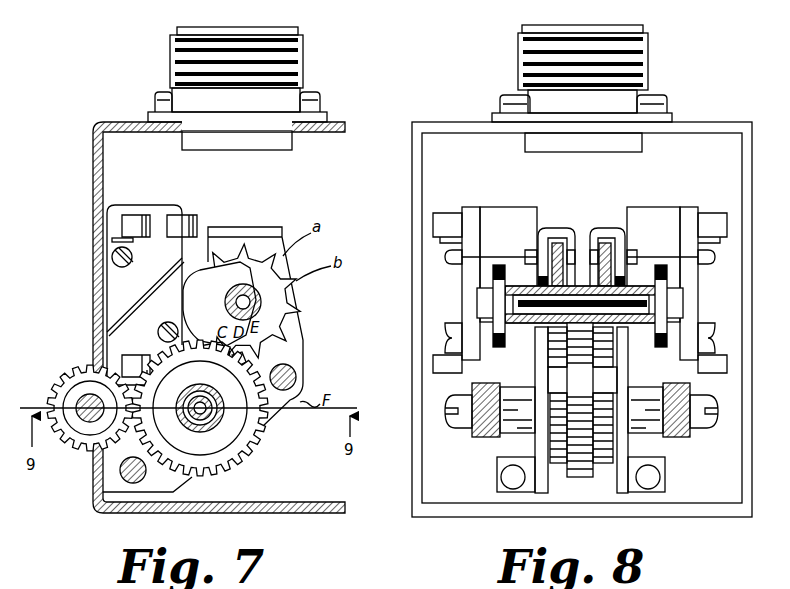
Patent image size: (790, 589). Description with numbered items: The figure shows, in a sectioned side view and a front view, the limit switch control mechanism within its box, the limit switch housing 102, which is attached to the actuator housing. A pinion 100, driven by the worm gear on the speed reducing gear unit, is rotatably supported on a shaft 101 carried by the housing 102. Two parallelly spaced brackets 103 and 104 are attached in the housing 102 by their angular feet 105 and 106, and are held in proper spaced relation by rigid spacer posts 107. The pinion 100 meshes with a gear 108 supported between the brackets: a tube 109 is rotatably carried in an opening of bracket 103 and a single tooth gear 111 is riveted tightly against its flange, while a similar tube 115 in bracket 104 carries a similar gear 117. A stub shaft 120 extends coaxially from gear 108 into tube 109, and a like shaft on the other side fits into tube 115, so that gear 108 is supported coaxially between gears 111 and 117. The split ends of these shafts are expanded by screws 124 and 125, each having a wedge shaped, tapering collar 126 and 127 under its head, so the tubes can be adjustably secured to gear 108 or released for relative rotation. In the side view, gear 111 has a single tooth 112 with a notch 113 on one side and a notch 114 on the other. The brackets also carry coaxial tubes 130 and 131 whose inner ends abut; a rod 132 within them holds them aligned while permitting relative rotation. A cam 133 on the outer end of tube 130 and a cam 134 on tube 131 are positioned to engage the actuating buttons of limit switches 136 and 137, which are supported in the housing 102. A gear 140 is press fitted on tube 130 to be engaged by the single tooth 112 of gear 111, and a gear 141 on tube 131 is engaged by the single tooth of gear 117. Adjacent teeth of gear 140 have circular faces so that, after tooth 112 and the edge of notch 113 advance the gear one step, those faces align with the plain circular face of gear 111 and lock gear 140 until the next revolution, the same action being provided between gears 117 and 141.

In FIG. 7, the pinion 100 is at (75, 372).
In FIG. 7, the shaft 101 is at (65, 388).
In FIG. 7, the limit switch housing 102 is at (93, 157).
In FIG. 8, the limit switch housing 102 is at (412, 157).
In FIG. 8, the bracket 103 is at (545, 228).
In FIG. 7, the bracket 104 is at (303, 344).
In FIG. 8, the bracket 104 is at (615, 230).
In FIG. 8, the angular foot 105 is at (497, 486).
In FIG. 8, the angular foot 106 is at (665, 487).
In FIG. 7, the spacer post 107 is at (307, 372).
In FIG. 8, the spacer post 107 is at (595, 378).
In FIG. 7, the gear 108 is at (253, 452).
In FIG. 8, the gear 108 is at (580, 477).
In FIG. 7, the tube 109 is at (240, 457).
In FIG. 8, the tube 109 is at (515, 395).
In FIG. 7, the gear 111 is at (240, 422).
In FIG. 8, the gear 111 is at (555, 432).
In FIG. 7, the single tooth 112 is at (214, 359).
In FIG. 7, the notch 113 is at (242, 374).
In FIG. 7, the notch 114 is at (199, 363).
In FIG. 8, the tube 115 is at (650, 395).
In FIG. 8, the gear 117 is at (605, 432).
In FIG. 7, the stub shaft 120 is at (190, 408).
In FIG. 7, the screw 124 is at (214, 453).
In FIG. 8, the screw 124 is at (468, 420).
In FIG. 8, the screw 125 is at (718, 418).
In FIG. 8, the tapering collar 126 is at (470, 425).
In FIG. 8, the tapering collar 127 is at (704, 428).
In FIG. 7, the tube 130 is at (240, 292).
In FIG. 8, the tube 130 is at (515, 333).
In FIG. 8, the tube 131 is at (650, 333).
In FIG. 7, the rod 132 is at (236, 306).
In FIG. 8, the rod 132 is at (505, 303).
In FIG. 7, the cam 133 is at (196, 296).
In FIG. 8, the cam 133 is at (499, 265).
In FIG. 8, the cam 134 is at (661, 265).
In FIG. 7, the limit switch 136 is at (150, 208).
In FIG. 8, the limit switch 136 is at (515, 213).
In FIG. 8, the limit switch 137 is at (655, 213).
In FIG. 7, the gear 140 is at (270, 295).
In FIG. 8, the gear 140 is at (558, 243).
In FIG. 8, the gear 141 is at (604, 243).